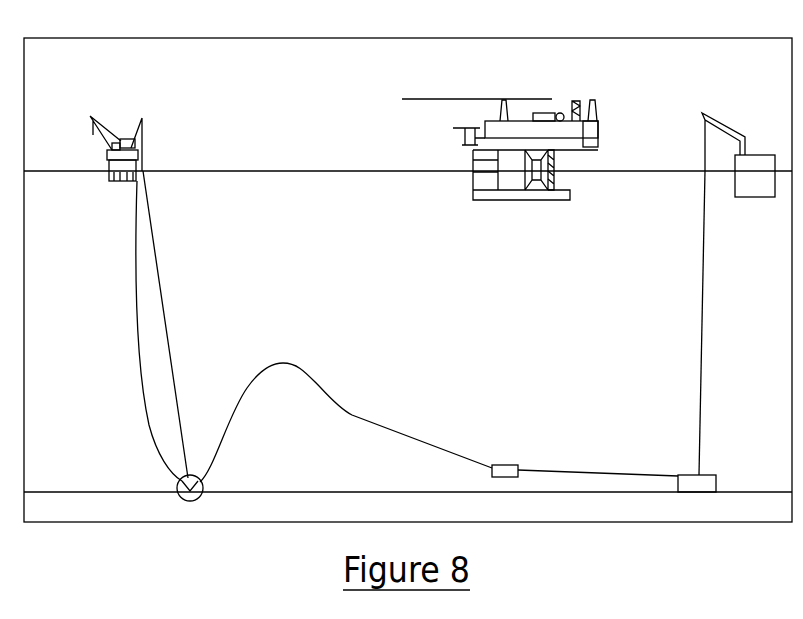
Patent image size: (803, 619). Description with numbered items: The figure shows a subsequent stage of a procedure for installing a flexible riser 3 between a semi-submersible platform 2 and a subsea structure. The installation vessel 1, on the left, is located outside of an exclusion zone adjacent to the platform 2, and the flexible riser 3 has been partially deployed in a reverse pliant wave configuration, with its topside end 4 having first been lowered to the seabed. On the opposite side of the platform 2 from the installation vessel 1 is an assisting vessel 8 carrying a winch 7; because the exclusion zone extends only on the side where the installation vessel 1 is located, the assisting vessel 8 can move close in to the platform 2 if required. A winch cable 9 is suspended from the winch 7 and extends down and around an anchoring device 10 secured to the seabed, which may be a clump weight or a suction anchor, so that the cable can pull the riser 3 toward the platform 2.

The installation vessel 1 is at (146, 148).
The platform 2 is at (456, 143).
The flexible riser 3 is at (303, 370).
The topside end 4 is at (501, 464).
The winch 7 is at (722, 132).
The assisting vessel 8 is at (754, 198).
The winch cable 9 is at (705, 362).
The anchoring device 10 is at (712, 475).